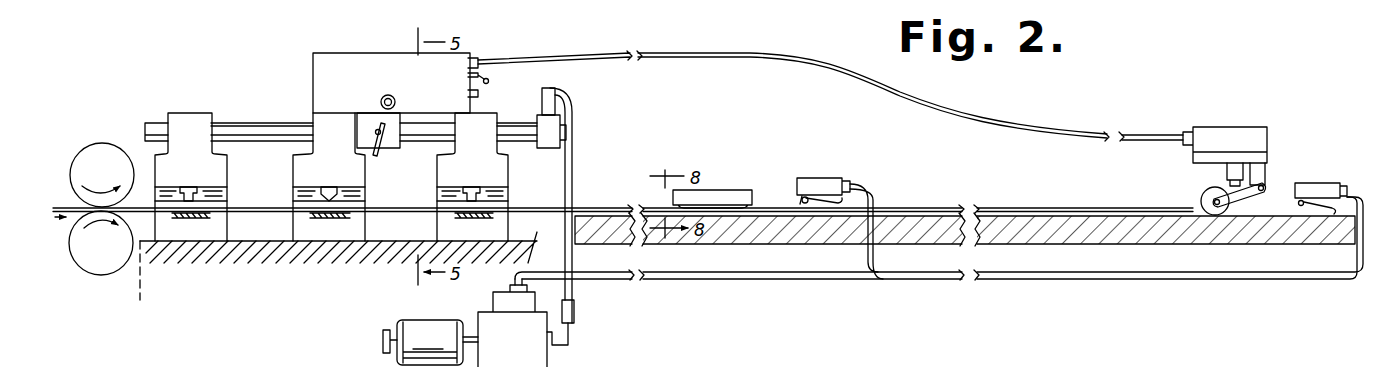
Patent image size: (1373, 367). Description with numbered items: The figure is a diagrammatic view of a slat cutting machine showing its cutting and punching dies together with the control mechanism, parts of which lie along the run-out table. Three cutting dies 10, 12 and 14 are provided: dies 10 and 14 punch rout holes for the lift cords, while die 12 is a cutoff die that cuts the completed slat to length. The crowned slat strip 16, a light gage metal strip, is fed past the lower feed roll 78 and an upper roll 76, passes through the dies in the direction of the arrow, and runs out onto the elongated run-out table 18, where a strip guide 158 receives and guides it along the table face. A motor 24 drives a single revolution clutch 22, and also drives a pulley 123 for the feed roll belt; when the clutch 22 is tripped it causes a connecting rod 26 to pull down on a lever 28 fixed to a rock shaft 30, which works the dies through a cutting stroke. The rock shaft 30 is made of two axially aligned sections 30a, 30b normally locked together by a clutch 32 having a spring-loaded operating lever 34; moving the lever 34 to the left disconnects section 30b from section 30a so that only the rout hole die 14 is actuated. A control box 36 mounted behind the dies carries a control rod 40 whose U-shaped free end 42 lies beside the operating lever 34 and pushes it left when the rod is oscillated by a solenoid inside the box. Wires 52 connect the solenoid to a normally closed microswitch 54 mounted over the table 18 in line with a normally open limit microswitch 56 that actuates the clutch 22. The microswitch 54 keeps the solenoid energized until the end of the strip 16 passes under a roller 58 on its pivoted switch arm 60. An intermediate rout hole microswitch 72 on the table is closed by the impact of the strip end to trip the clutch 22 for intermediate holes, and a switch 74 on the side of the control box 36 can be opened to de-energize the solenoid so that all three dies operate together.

The cutting die 10 is at (200, 220).
The cutoff die 12 is at (334, 220).
The rout hole die 14 is at (482, 220).
The crowned slat strip 16 is at (273, 207).
The run-out table 18 is at (980, 236).
The single revolution clutch 22 is at (525, 355).
The motor 24 is at (437, 342).
The connecting rod 26 is at (574, 152).
The lever 28 is at (550, 92).
The rock shaft 30 is at (152, 116).
The first section of rock shaft 30a is at (516, 126).
The second section of rock shaft 30b is at (252, 126).
The clutch 32 is at (402, 117).
The operating lever 34 is at (376, 130).
The control box 36 is at (334, 62).
The control rod 40 is at (380, 86).
The free end of control rod 42 is at (381, 152).
The wires 52 is at (979, 118).
The microswitch 54 is at (1232, 137).
The limit microswitch 56 is at (1318, 185).
The roller 58 is at (1214, 217).
The switch arm 60 is at (1248, 200).
The intermediate rout hole microswitch 72 is at (822, 180).
The switch 74 is at (488, 72).
The upper feed roll 76 is at (102, 152).
The lower feed roll 78 is at (92, 258).
The pulley 123 is at (391, 318).
The strip guide 158 is at (730, 190).